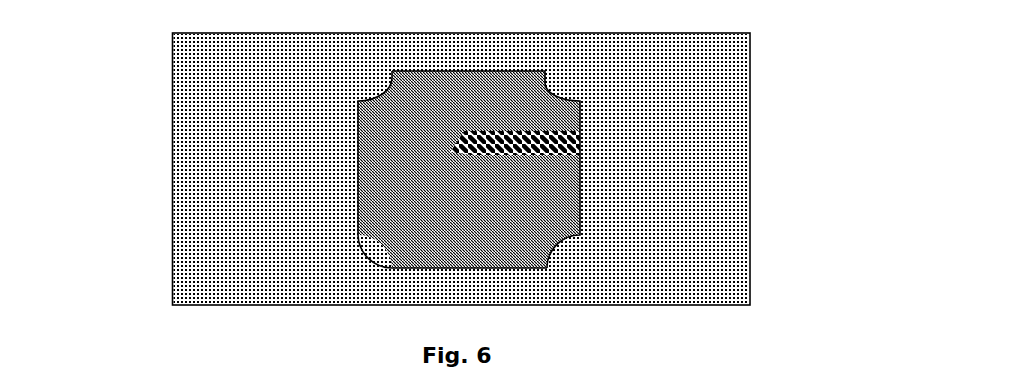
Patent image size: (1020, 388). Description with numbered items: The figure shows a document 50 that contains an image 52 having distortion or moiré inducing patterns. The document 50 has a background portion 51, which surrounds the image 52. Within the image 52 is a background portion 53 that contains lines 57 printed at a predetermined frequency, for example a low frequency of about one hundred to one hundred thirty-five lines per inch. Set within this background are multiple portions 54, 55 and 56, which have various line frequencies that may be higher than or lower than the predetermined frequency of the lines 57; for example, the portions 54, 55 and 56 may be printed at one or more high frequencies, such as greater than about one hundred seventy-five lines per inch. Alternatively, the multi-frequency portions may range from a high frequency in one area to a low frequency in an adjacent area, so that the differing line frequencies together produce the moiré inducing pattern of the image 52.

The document 50 is at (172, 70).
The background portion 51 is at (210, 121).
The image 52 is at (357, 146).
The background portion 53 is at (402, 255).
The portion 54 is at (377, 201).
The portion 55 is at (450, 93).
The portion 56 is at (500, 128).
The lines 57 is at (523, 234).